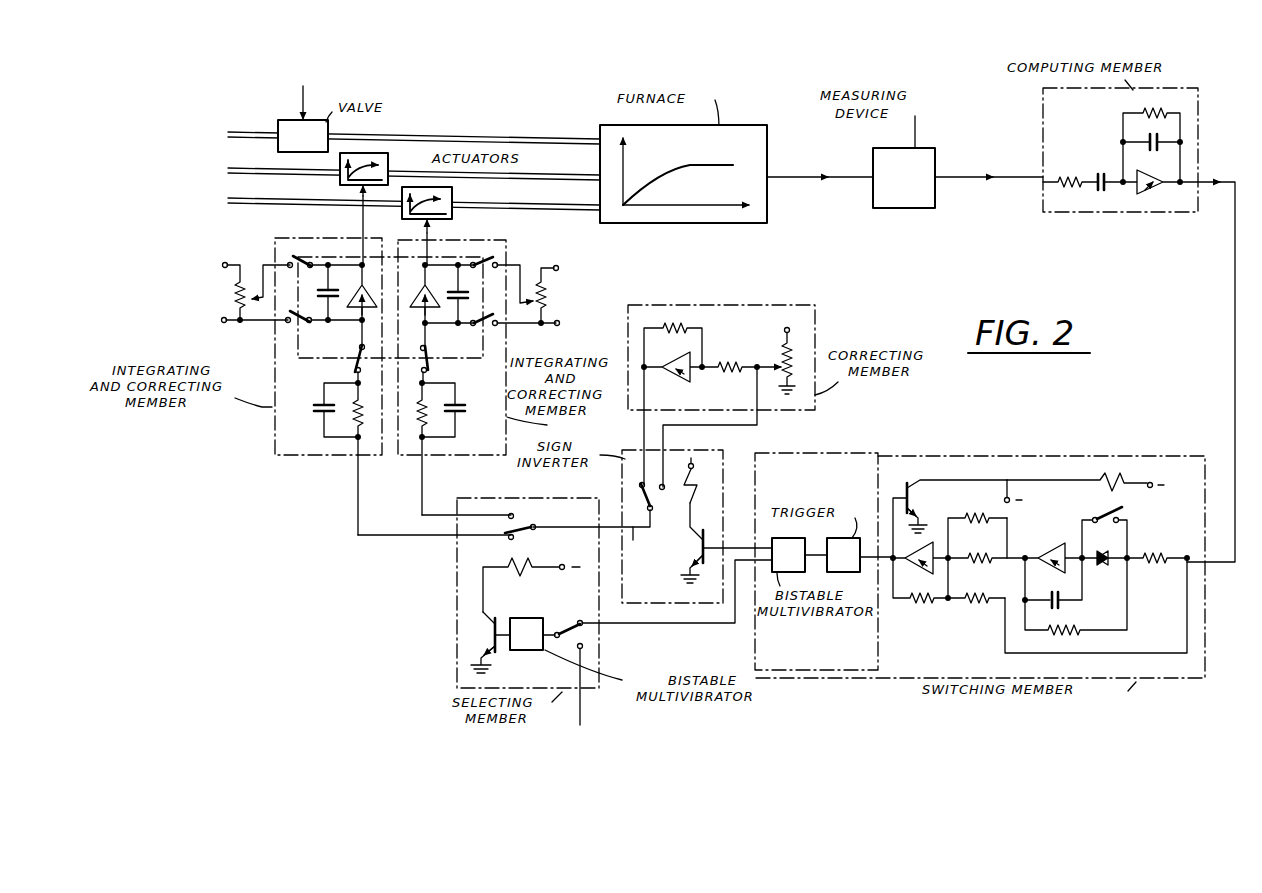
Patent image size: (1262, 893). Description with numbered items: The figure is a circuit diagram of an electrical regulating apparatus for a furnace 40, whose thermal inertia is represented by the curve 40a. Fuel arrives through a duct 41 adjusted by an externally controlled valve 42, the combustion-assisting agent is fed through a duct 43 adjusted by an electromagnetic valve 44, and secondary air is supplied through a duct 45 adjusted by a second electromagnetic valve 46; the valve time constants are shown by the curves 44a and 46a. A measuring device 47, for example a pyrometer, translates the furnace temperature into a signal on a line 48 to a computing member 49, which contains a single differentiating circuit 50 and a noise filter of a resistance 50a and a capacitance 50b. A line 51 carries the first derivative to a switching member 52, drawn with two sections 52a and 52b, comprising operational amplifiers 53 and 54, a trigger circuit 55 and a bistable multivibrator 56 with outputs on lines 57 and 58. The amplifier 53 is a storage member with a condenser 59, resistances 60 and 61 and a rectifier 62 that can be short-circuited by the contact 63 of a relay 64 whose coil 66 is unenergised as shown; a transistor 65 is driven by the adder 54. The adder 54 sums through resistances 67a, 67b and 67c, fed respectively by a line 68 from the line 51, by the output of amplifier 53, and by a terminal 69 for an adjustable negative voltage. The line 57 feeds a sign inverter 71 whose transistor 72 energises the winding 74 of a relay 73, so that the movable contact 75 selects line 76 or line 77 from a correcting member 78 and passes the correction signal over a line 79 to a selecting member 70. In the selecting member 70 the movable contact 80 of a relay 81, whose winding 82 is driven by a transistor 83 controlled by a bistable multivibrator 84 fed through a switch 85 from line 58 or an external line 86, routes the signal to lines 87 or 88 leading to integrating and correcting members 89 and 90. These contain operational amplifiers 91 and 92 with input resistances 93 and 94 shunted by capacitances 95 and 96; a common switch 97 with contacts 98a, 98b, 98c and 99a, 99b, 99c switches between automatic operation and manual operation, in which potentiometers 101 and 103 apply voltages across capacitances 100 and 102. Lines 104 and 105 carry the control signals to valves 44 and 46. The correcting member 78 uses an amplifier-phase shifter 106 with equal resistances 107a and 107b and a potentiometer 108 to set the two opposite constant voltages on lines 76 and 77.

The furnace 40 is at (767, 147).
The curve 40a is at (665, 165).
The duct 41 is at (542, 140).
The valve 42 is at (286, 118).
The duct 43 is at (540, 175).
The electro-magnetic valve 44 is at (388, 162).
The curve 44a is at (340, 186).
The duct 45 is at (540, 207).
The second electromagnetic valve 46 is at (452, 197).
The curve 46a is at (407, 218).
The measuring device 47 is at (904, 178).
The line 48 is at (972, 182).
The computing member 49 is at (1084, 213).
The differentiating circuit 50 is at (1149, 194).
The resistance 50a is at (1068, 175).
The capacitance 50b is at (1150, 138).
The line 51 is at (1230, 421).
The switching member 52 is at (893, 454).
The switching member 52a is at (1050, 458).
The trigger and bistable multivibrator section 52b is at (832, 462).
The operational amplifier 53 is at (1046, 555).
The operational amplifier 54 is at (921, 572).
The trigger circuit 55 is at (849, 555).
The bistable multivibrator 56 is at (788, 555).
The line 57 is at (733, 548).
The line 58 is at (727, 626).
The condenser 59 is at (1062, 606).
The resistance 60 is at (1080, 631).
The resistance 61 is at (1157, 558).
The rectifier 62 is at (1100, 568).
The contact 63 is at (1126, 511).
The relay 64 is at (1096, 505).
The transistor 65 is at (904, 488).
The coil 66 is at (1119, 486).
The resistance 67a is at (975, 596).
The resistance 67b is at (975, 552).
The resistance 67c is at (970, 515).
The line 68 is at (1008, 644).
The terminal 69 is at (1008, 490).
The selecting member 70 is at (457, 600).
The sign inverter 71 is at (670, 604).
The transistor 72 is at (702, 549).
The relay 73 is at (672, 506).
The energising winding 74 is at (694, 493).
The movable contact 75 is at (638, 490).
The line 76 is at (643, 441).
The line 77 is at (668, 437).
The correcting member 78 is at (760, 308).
The line 79 is at (645, 545).
The movable contact 80 is at (522, 522).
The relay 81 is at (520, 543).
The winding 82 is at (516, 574).
The transistor 83 is at (497, 648).
The bistable multivibrator 84 is at (526, 634).
The switch 85 is at (572, 617).
The line 86 is at (583, 713).
The line 87 is at (358, 524).
The line 88 is at (419, 500).
The integrating and correcting member 89 is at (292, 455).
The integrating and correcting member 90 is at (492, 455).
The operational amplifier 91 is at (366, 304).
The operational amplifier 92 is at (420, 304).
The input resistance 93 is at (352, 407).
The input resistance 94 is at (435, 403).
The capacitance 95 is at (320, 412).
The capacitance 96 is at (462, 414).
The common switch 97 is at (485, 348).
The contact 98a is at (353, 370).
The contact 98b is at (298, 328).
The contact 98c is at (310, 262).
The contact 99a is at (432, 369).
The contact 99b is at (480, 332).
The contact 99c is at (476, 263).
The capacitance 100 is at (340, 290).
The potentiometer 101 is at (252, 287).
The capacitance 102 is at (458, 284).
The potentiometer 103 is at (528, 300).
The line 104 is at (358, 219).
The line 105 is at (448, 235).
The amplifier-phase shifter 106 is at (673, 379).
The resistance 107a is at (730, 384).
The resistance 107b is at (672, 318).
The potentiometer 108 is at (777, 358).